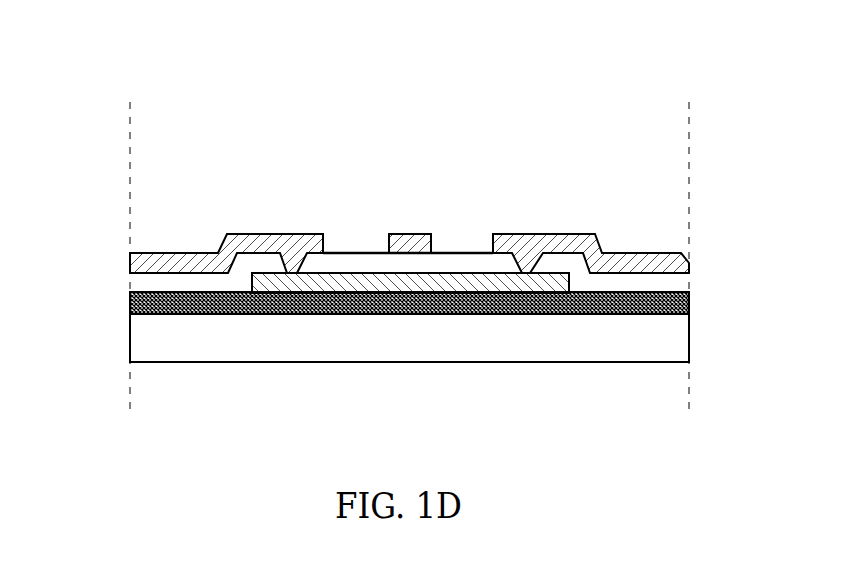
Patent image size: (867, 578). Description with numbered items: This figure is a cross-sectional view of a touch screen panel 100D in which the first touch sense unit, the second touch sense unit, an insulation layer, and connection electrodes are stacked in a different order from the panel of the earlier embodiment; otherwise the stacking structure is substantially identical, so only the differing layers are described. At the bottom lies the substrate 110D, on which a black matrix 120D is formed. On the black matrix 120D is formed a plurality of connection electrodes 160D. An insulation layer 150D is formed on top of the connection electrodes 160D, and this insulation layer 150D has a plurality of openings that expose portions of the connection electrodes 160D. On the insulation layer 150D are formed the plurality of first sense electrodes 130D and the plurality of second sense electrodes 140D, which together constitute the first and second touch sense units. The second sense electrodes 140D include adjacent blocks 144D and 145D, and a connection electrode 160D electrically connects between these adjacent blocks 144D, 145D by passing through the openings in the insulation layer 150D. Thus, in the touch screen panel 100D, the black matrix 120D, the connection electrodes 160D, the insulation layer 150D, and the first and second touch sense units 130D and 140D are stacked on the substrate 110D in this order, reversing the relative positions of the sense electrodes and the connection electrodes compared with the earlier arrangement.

The touch screen panel 100D is at (692, 40).
The substrate 110D is at (658, 340).
The black matrix 120D is at (690, 305).
The first sense electrodes 130D is at (412, 242).
The second sense electrodes 140D is at (412, 354).
The block 144D is at (162, 265).
The block 145D is at (650, 265).
The insulation layer 150D is at (655, 285).
The connection electrodes 160D is at (413, 283).